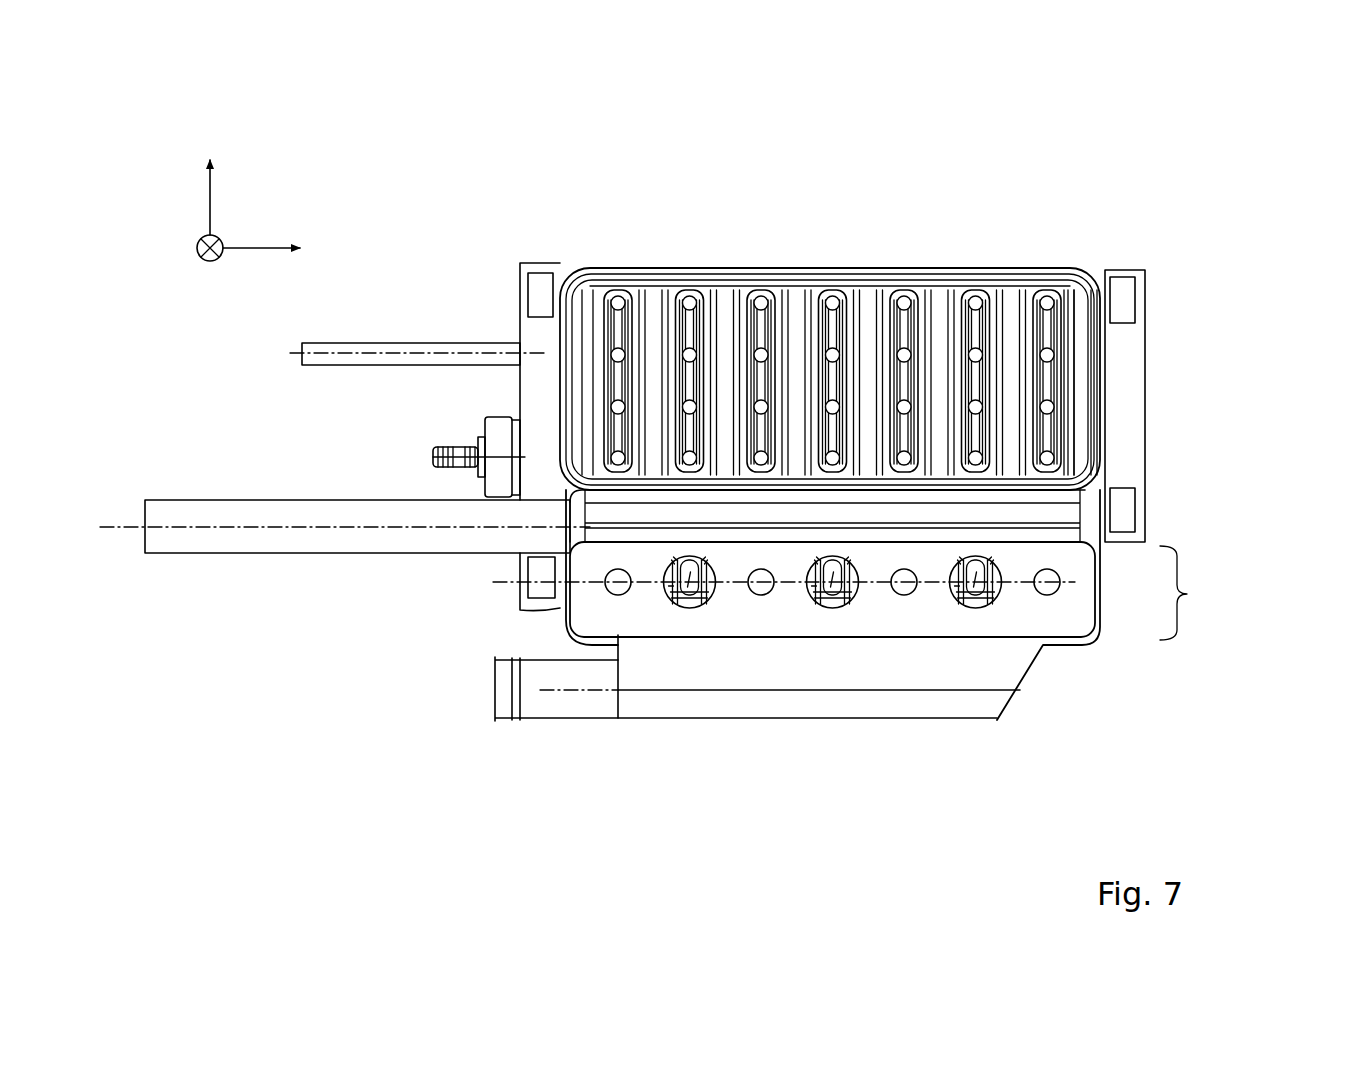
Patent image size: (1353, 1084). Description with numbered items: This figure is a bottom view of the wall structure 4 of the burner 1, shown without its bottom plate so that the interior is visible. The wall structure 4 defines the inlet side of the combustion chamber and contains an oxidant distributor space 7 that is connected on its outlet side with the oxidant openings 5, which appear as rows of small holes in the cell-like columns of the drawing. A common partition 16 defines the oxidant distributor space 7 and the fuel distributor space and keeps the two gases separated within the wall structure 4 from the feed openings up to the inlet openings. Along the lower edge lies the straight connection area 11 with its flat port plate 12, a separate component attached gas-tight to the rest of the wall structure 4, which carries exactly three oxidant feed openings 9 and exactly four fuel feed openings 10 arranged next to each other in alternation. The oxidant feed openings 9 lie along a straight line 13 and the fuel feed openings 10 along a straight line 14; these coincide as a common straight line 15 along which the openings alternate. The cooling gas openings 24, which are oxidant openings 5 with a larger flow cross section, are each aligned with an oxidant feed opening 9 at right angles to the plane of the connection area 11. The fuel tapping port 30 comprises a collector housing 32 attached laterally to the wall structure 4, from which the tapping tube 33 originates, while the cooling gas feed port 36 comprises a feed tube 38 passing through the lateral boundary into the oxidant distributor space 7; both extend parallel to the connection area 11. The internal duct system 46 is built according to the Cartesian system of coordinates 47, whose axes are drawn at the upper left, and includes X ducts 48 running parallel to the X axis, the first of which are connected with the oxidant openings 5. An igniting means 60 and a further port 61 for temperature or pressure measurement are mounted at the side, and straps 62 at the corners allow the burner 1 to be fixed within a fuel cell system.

The burner 1 is at (1200, 228).
The wall structure 4 is at (1101, 642).
The oxidant openings 5 is at (843, 312).
The oxidant distributor space 7 is at (1014, 298).
The oxidant feed openings 9 is at (856, 667).
The fuel feed openings 10 is at (620, 586).
The connection area 11 is at (793, 634).
The port plate 12 is at (887, 613).
The straight line 13 is at (699, 667).
The straight line 14 is at (699, 667).
The common straight line 15 is at (699, 667).
The partition 16 is at (850, 328).
The cooling gas opening 24 is at (687, 606).
The fuel tapping port 30 is at (757, 738).
The collector housing 32 is at (757, 727).
The tapping tube 33 is at (588, 706).
The cooling gas feed port 36 is at (345, 462).
The feed tube 38 is at (262, 510).
The duct system 46 is at (1088, 391).
The system of coordinates 47 is at (242, 206).
The X ducts 48 is at (843, 312).
The igniting means 60 is at (485, 430).
The port 61 is at (380, 343).
The straps 62 is at (540, 296).